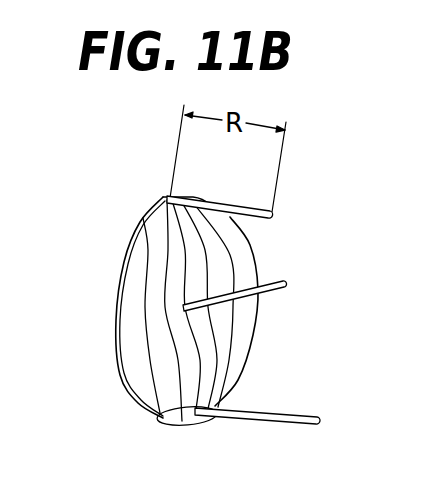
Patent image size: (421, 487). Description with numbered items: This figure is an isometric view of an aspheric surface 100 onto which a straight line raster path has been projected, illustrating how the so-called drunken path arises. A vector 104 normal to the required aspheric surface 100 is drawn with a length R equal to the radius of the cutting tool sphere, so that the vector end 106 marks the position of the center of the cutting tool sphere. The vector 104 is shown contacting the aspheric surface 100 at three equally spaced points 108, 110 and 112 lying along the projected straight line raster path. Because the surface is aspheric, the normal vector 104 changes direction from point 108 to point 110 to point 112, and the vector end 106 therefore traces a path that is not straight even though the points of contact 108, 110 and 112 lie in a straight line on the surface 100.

The aspheric surface 100 is at (118, 372).
The vector 104 is at (270, 292).
The vector end 106 is at (297, 410).
The point 108 is at (163, 198).
The point 110 is at (183, 307).
The point 112 is at (180, 413).